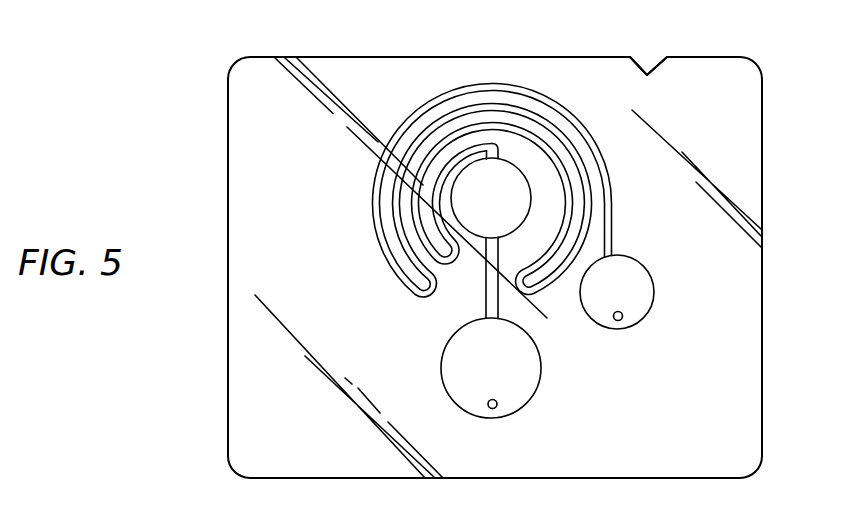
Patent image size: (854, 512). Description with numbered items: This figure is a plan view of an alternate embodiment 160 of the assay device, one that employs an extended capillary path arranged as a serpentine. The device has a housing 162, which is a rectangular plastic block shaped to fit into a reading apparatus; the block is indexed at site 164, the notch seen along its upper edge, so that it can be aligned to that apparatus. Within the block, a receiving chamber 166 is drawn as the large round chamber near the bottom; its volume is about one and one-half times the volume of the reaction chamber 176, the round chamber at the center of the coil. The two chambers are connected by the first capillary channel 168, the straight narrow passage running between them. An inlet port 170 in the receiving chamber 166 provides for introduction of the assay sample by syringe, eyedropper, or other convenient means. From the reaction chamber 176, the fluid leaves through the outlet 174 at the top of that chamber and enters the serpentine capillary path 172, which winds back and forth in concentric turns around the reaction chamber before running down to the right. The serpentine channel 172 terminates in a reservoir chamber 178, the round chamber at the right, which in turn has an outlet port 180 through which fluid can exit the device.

The embodiment 160 is at (763, 112).
The housing 162 is at (745, 401).
The indexing site 164 is at (650, 60).
The receiving chamber 166 is at (518, 378).
The first capillary channel 168 is at (484, 306).
The inlet port 170 is at (498, 405).
The serpentine capillary path 172 is at (421, 110).
The outlet 174 is at (523, 166).
The reaction chamber 176 is at (498, 210).
The reservoir chamber 178 is at (645, 283).
The outlet port 180 is at (623, 316).